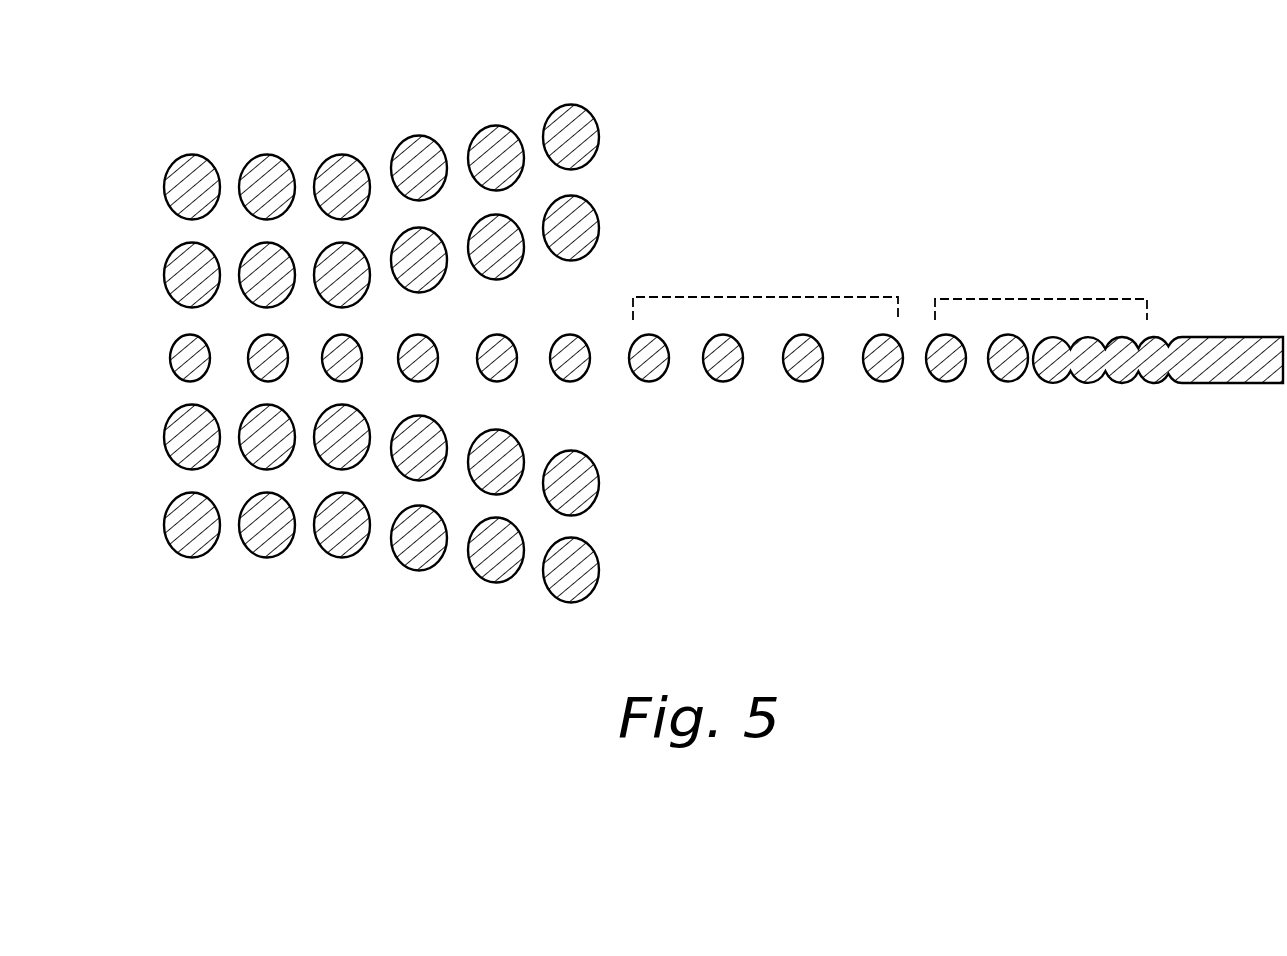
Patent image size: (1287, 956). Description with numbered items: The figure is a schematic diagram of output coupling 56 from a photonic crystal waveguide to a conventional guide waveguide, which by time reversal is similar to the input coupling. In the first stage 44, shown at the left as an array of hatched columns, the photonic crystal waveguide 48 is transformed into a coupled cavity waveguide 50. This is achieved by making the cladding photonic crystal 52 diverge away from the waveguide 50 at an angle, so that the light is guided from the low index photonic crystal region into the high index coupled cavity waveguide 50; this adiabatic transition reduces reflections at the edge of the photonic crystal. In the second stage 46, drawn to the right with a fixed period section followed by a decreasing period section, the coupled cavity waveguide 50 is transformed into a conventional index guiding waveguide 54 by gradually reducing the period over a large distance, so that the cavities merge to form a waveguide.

The first stage 44 is at (381, 336).
The second stage 46 is at (956, 385).
The photonic crystal waveguide 48 is at (345, 140).
The coupled cavity waveguide 50 is at (776, 389).
The cladding photonic crystal 52 is at (587, 85).
The conventional index guiding waveguide 54 is at (1216, 384).
The output coupling 56 is at (997, 575).